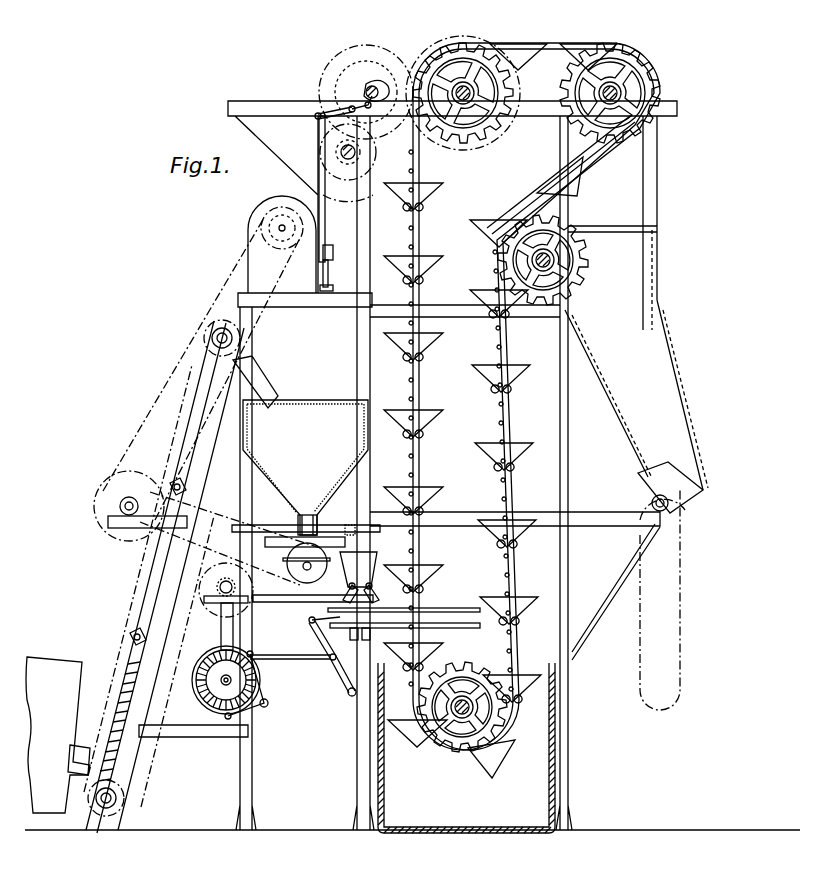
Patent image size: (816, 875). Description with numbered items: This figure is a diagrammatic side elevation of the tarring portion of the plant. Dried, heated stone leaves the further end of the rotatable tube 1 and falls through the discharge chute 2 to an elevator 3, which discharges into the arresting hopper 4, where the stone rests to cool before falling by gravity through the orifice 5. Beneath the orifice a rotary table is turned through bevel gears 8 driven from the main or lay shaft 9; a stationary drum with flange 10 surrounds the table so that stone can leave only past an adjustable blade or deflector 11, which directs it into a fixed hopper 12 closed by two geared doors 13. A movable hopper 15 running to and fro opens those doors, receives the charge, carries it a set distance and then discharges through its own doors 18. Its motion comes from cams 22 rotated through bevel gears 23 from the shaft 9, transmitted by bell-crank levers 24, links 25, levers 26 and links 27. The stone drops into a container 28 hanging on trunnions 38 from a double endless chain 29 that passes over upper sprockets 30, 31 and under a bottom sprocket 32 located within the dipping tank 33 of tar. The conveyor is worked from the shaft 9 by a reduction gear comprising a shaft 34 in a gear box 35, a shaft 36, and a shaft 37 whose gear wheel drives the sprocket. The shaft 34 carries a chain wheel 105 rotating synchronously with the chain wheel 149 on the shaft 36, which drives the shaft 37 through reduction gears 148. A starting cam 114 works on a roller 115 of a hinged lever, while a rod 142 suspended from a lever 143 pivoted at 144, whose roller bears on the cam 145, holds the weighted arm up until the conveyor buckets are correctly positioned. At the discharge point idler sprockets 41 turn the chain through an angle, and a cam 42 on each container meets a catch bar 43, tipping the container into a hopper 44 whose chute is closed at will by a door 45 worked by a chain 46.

The tube 1 is at (82, 664).
The discharge chute 2 is at (80, 748).
The elevator 3 is at (135, 602).
The arresting hopper 4 is at (317, 412).
The orifice 5 is at (298, 528).
The bevel gears 8 is at (316, 556).
The main or lay shaft 9 is at (128, 528).
The stationary drum with flange 10 is at (283, 548).
The adjustable blade or deflector 11 is at (348, 526).
The fixed hopper 12 is at (375, 562).
The doors 13 is at (378, 598).
The movable hopper 15 is at (350, 634).
The doors 18 is at (364, 641).
The cams 22 is at (203, 697).
The bevel gears 23 is at (220, 612).
The bell-crank levers 24 is at (259, 682).
The links 25 is at (283, 654).
The levers 26 is at (342, 676).
The links 27 is at (320, 618).
The container or basket 28 is at (568, 205).
The double endless chain 29 is at (420, 378).
The upper sprocket 30 is at (497, 112).
The upper sprocket 31 is at (640, 70).
The bottom sprocket 32 is at (446, 742).
The dipping tank 33 is at (378, 768).
The shaft 34 is at (278, 229).
The gear box 35 is at (258, 216).
The shaft 36 is at (341, 148).
The shaft 37 is at (368, 88).
The pivots or trunnions 38 is at (572, 183).
The idler sprockets 41 is at (588, 263).
The cams 42 is at (560, 183).
The catch bars 43 is at (605, 150).
The hopper 44 is at (645, 318).
The door 45 is at (688, 508).
The chain 46 is at (681, 618).
The chain wheel 105 is at (276, 240).
The starting cam 114 is at (333, 256).
The roller 115 is at (330, 285).
The rod 142 is at (325, 222).
The lever 143 is at (345, 109).
The pivot 144 is at (365, 104).
The cam 145 is at (415, 62).
The reduction gears 148 is at (350, 50).
The chain wheel 149 is at (368, 200).